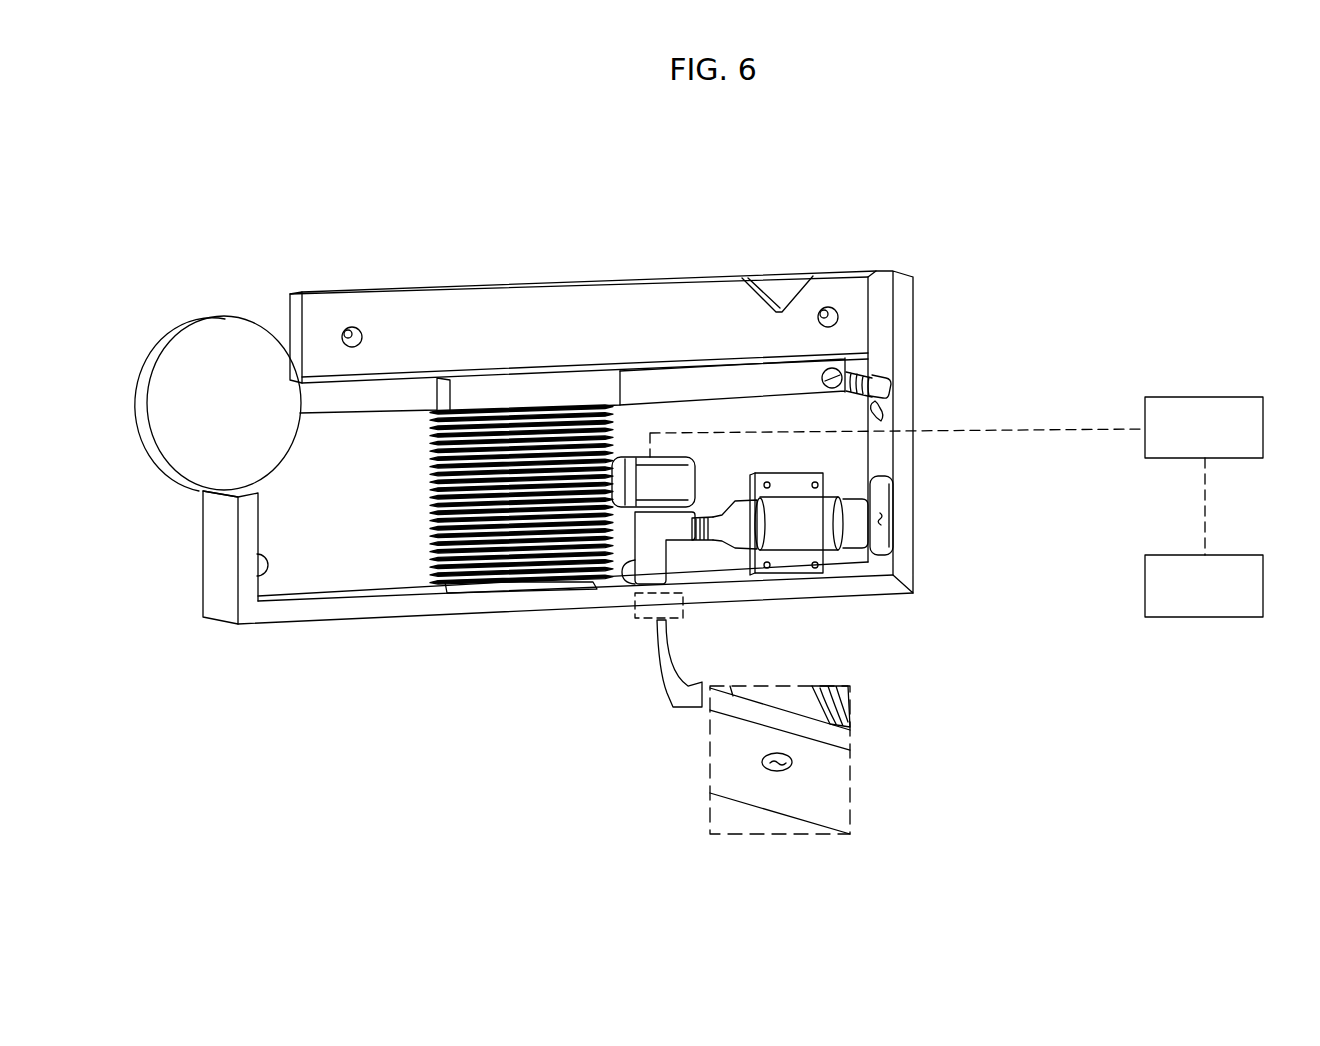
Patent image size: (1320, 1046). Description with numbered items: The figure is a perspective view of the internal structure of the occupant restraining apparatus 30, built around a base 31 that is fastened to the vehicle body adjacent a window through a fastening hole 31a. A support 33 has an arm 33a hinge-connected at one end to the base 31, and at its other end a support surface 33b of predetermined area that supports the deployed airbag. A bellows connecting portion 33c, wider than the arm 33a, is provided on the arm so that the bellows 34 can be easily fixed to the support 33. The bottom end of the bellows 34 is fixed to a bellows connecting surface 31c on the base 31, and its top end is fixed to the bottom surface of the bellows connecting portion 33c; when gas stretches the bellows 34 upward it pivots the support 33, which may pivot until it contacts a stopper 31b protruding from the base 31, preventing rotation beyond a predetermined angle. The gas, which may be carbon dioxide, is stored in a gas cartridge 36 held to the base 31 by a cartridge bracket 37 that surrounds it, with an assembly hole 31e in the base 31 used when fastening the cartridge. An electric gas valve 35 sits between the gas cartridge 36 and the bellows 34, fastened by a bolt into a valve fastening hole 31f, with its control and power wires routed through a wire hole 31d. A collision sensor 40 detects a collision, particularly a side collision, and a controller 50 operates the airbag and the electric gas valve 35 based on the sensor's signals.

The occupant restraining apparatus 30 is at (1078, 226).
The base 31 is at (418, 310).
The fastening hole 31a is at (346, 330).
The stopper 31b is at (783, 287).
The bellows connecting surface 31c is at (373, 593).
The wire hole 31d is at (882, 407).
The assembly hole 31e is at (888, 515).
The valve fastening hole 31f is at (782, 770).
The support 33 is at (603, 207).
The arm 33a is at (668, 380).
The support surface 33b is at (198, 347).
The bellows connecting portion 33c is at (485, 385).
The bellows 34 is at (522, 557).
The electric gas valve 35 is at (645, 532).
The gas cartridge 36 is at (857, 540).
The cartridge bracket 37 is at (805, 567).
The collision sensor 40 is at (1230, 617).
The controller 50 is at (1235, 397).